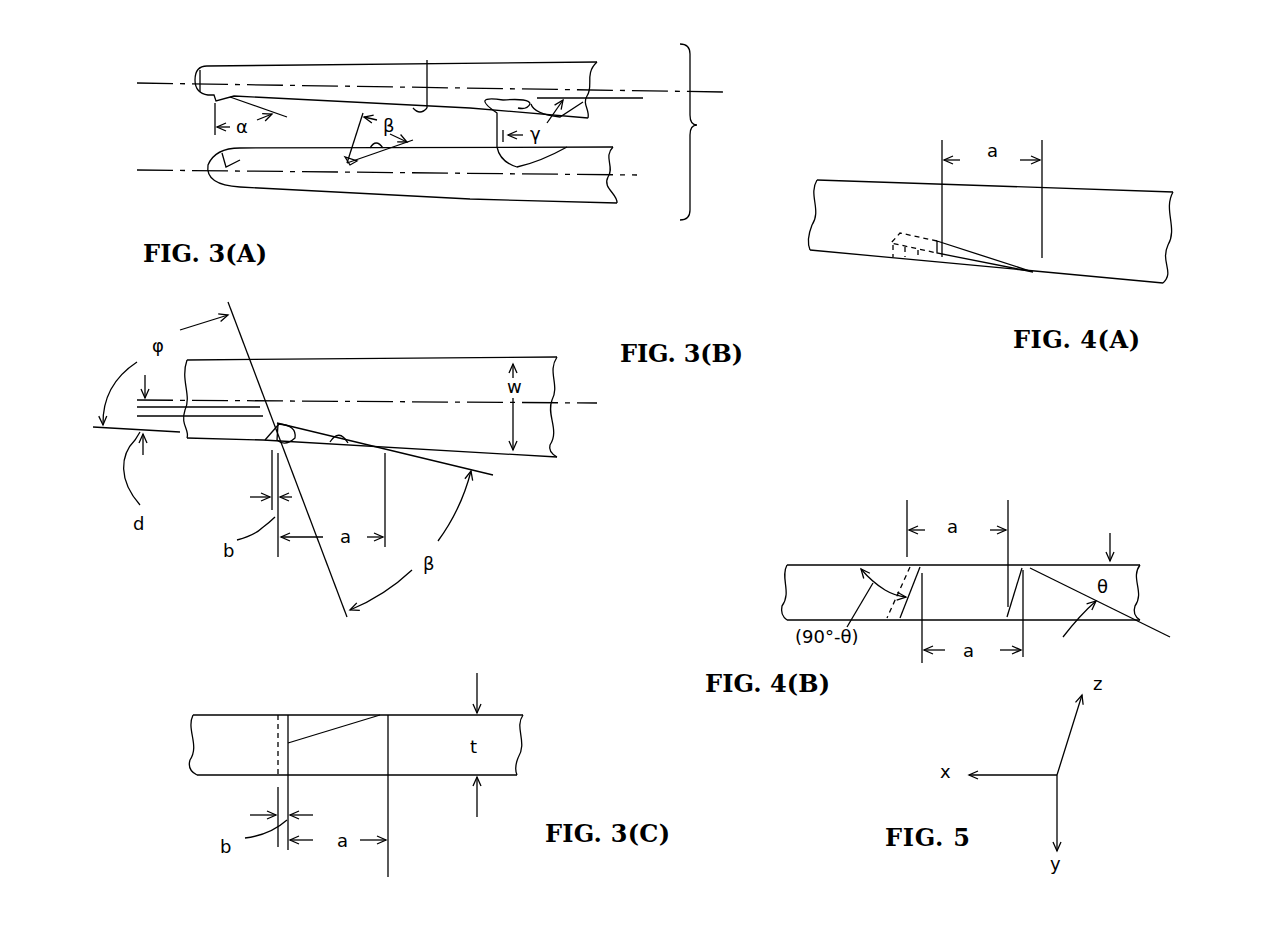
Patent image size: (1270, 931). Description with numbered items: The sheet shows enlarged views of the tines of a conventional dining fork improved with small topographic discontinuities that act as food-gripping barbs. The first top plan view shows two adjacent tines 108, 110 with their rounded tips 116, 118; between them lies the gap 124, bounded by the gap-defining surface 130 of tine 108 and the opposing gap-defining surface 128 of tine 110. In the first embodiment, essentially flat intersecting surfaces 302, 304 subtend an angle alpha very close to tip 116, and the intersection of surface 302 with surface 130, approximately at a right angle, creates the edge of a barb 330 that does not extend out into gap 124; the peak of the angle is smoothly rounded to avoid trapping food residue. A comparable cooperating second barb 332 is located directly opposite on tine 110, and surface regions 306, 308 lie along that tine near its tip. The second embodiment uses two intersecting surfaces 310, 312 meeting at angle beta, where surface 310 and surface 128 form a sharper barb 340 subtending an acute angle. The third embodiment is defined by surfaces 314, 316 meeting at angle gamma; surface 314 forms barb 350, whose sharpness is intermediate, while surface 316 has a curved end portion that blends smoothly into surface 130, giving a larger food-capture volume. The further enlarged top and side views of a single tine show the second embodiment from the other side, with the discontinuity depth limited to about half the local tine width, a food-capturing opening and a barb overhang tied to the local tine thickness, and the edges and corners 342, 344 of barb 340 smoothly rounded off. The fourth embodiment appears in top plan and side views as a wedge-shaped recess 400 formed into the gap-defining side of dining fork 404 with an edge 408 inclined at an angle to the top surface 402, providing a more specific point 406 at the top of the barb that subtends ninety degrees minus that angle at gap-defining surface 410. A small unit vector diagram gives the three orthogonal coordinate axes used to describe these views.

In FIG. 3A, the tine 108 is at (563, 73).
In FIG. 3A, the tine 110 is at (607, 188).
In FIG. 3B, the tine 110 is at (437, 373).
In FIG. 3A, the tip 116 is at (200, 83).
In FIG. 3A, the tip 118 is at (207, 172).
In FIG. 3A, the gap 124 is at (588, 118).
In FIG. 3A, the gap-defining surface 128 is at (627, 143).
In FIG. 3B, the gap-defining surface 128 is at (533, 458).
In FIG. 3C, the gap-defining surface 128 is at (505, 723).
In FIG. 3A, the gap-defining surface 130 is at (427, 60).
In FIG. 3A, the flat surface 302 is at (228, 100).
In FIG. 3A, the flat surface 304 is at (233, 97).
In FIG. 3A, the second tube end face 306 is at (240, 160).
In FIG. 3A, the second tube edge 308 is at (247, 152).
In FIG. 3A, the intersecting surface 310 is at (360, 165).
In FIG. 3B, the intersecting surface 310 is at (277, 423).
In FIG. 3A, the intersecting surface 312 is at (383, 152).
In FIG. 3B, the intersecting surface 312 is at (345, 435).
In FIG. 3C, the intersecting surface 312 is at (348, 737).
In FIG. 3A, the intersecting surface 314 is at (503, 100).
In FIG. 3A, the intersecting surface 316 is at (531, 104).
In FIG. 3A, the barb 330 is at (212, 99).
In FIG. 3A, the second barb 332 is at (210, 147).
In FIG. 3A, the barb 340 is at (347, 160).
In FIG. 3B, the barb 340 is at (270, 340).
In FIG. 3C, the barb 340 is at (290, 742).
In FIG. 3C, the edge 342 is at (293, 715).
In FIG. 3C, the corner 344 is at (290, 777).
In FIG. 3A, the barb 350 is at (581, 131).
In FIG. 4A, the wedge-shaped recess 400 is at (957, 263).
In FIG. 4A, the top surface 402 is at (1123, 185).
In FIG. 4B, the top surface 402 is at (810, 563).
In FIG. 4A, the dining fork 404 is at (818, 203).
In FIG. 4B, the dining fork 404 is at (787, 602).
In FIG. 4A, the point 406 is at (940, 267).
In FIG. 4B, the point 406 is at (920, 567).
In FIG. 4A, the edge 408 is at (920, 262).
In FIG. 4B, the edge 408 is at (903, 604).
In FIG. 4B, the gap-defining surface 410 is at (1127, 570).